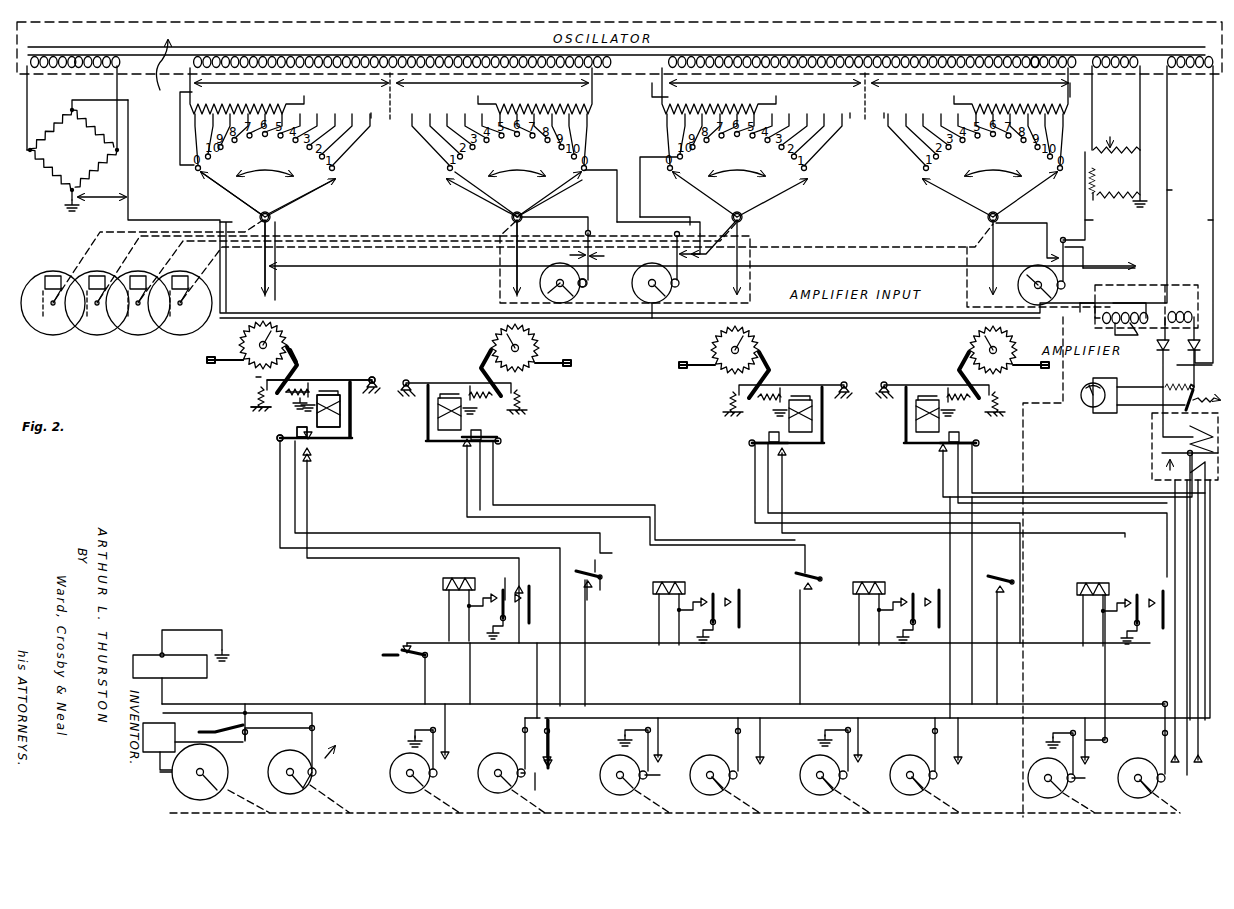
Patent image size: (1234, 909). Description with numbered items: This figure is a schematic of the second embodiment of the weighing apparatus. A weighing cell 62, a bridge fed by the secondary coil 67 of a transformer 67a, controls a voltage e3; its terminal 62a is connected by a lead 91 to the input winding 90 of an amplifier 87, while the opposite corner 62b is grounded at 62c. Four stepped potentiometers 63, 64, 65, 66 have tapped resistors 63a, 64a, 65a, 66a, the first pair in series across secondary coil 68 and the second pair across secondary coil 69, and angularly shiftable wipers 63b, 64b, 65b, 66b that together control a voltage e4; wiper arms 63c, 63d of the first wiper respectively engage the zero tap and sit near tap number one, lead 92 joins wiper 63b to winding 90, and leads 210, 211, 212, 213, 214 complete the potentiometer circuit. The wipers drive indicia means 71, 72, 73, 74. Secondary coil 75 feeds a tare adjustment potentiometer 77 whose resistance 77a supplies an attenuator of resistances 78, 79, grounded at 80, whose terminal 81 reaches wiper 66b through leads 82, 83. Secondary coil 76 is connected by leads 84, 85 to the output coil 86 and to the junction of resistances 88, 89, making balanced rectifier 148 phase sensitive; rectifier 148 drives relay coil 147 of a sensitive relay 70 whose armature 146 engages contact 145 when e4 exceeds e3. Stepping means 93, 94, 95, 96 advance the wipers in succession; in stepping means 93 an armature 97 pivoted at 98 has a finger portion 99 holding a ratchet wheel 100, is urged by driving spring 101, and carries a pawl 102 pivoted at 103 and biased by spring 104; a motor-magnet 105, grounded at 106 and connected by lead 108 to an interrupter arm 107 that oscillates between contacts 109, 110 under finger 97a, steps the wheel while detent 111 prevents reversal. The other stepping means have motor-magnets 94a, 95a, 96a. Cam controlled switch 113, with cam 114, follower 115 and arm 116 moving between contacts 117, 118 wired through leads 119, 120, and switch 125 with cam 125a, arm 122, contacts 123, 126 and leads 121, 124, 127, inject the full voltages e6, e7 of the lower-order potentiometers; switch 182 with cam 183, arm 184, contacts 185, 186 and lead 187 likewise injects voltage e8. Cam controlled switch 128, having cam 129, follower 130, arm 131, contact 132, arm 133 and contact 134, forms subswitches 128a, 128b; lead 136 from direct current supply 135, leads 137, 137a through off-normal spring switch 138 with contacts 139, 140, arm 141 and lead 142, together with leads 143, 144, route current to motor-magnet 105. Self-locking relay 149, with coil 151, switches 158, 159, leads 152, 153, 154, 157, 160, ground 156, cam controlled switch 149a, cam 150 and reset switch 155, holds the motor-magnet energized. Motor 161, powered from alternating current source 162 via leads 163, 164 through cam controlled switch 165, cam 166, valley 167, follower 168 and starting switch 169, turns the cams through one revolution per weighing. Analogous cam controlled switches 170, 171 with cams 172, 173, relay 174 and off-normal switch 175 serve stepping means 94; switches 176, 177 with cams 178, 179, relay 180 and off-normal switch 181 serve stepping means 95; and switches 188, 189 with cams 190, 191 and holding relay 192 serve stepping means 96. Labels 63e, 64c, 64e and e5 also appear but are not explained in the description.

The weighing cell 62 is at (73, 150).
The terminal 62a is at (70, 110).
The corner 62b is at (72, 188).
The ground 62c is at (68, 203).
The stepped potentiometer 63 is at (280, 181).
The tapped resistor 63a is at (373, 132).
The wiper 63b is at (265, 210).
The wiper arm 63c is at (224, 185).
The wiper arm 63d is at (310, 193).
The wiper lead 63e is at (264, 260).
The stepped potentiometer 64 is at (502, 181).
The tapped resistor 64a is at (485, 195).
The wiper 64b is at (517, 211).
The wiper arm 64c is at (558, 188).
The wiper lead 64e is at (516, 286).
The stepped potentiometer 65 is at (752, 181).
The tapped resistor 65a is at (849, 133).
The wiper 65b is at (737, 211).
The stepped potentiometer 66 is at (978, 181).
The tapped resistor 66a is at (891, 133).
The wiper 66b is at (993, 211).
The secondary coil 67 is at (80, 46).
The transformer 67a is at (155, 68).
The secondary coil 68 is at (402, 60).
The secondary coil 69 is at (862, 60).
The sensitive relay 70 is at (1151, 446).
The indicia means 71 is at (142, 287).
The indicia means 72 is at (291, 287).
The indicia means 73 is at (421, 288).
The indicia means 74 is at (570, 289).
The secondary coil 75 is at (1116, 91).
The secondary coil 76 is at (1146, 198).
The tare adjustment potentiometer 77 is at (1116, 136).
The resistance 77a is at (1120, 135).
The attenuator resistance 78 is at (1101, 180).
The attenuator resistance 79 is at (1118, 174).
The ground 80 is at (1133, 215).
The terminal 81 is at (1103, 204).
The lead 82 is at (1099, 225).
The lead 83 is at (1020, 222).
The lead 84 is at (1181, 190).
The lead 85 is at (1200, 220).
The output coil 86 is at (1180, 312).
The amplifier 87 is at (1114, 306).
The resistance 88 is at (1162, 386).
The resistance 89 is at (1203, 390).
The input winding 90 is at (1134, 334).
The lead 91 is at (128, 172).
The lead 92 is at (252, 220).
The stepping means 93 is at (293, 381).
The stepping means 94 is at (484, 384).
The motor-magnet 94a is at (480, 418).
The stepping means 95 is at (765, 386).
The motor-magnet 95a is at (788, 415).
The stepping means 96 is at (962, 386).
The motor-magnet 96a is at (953, 417).
The armature 97 is at (330, 380).
The finger 97a is at (352, 425).
The pivot 98 is at (375, 368).
The finger portion 99 is at (254, 375).
The ratchet wheel 100 is at (275, 332).
The driving spring 101 is at (256, 397).
The pawl 102 is at (296, 364).
The pivot 103 is at (262, 386).
The spring 104 is at (292, 394).
The motor-magnet 105 is at (342, 411).
The ground 106 is at (298, 404).
The interrupter arm 107 is at (316, 440).
The lead 108 is at (279, 440).
The contact 109 is at (311, 460).
The contact 110 is at (319, 444).
The detent 111 is at (226, 360).
The cam controlled switch 113 is at (554, 276).
The cam 114 is at (576, 290).
The follower 115 is at (588, 283).
The switch arm 116 is at (592, 265).
The contact 117 is at (569, 246).
The contact 118 is at (610, 255).
The lead 119 is at (546, 220).
The lead 120 is at (617, 218).
The lead 121 is at (658, 231).
The switch arm 122 is at (686, 276).
The contact 123 is at (701, 249).
The lead 124 is at (648, 212).
The cam controlled switch 125 is at (673, 283).
The cam 125a is at (660, 321).
The contact 126 is at (713, 235).
The lead 127 is at (640, 162).
The cam controlled switch 128 is at (508, 743).
The first switch 128a is at (524, 729).
The second switch 128b is at (556, 736).
The cam 129 is at (487, 785).
The follower 130 is at (555, 775).
The switch arm 131 is at (520, 742).
The contact 132 is at (540, 783).
The arm 133 is at (552, 764).
The contact 134 is at (555, 748).
The direct current supply 135 is at (209, 667).
The lead 136 is at (349, 702).
The lead 137 is at (535, 682).
The lead 137a is at (296, 504).
The off-normal spring switch 138 is at (603, 579).
The contact 139 is at (597, 567).
The contact 140 is at (588, 598).
The switch arm 141 is at (602, 584).
The lead 142 is at (585, 671).
The lead 143 is at (279, 502).
The lead 144 is at (604, 716).
The contact 145 is at (1182, 588).
The armature 146 is at (1190, 448).
The relay coil 147 is at (1187, 419).
The balanced rectifier 148 is at (1184, 363).
The self-locking relay 149 is at (459, 609).
The cam controlled switch 149a is at (447, 731).
The cam 150 is at (406, 758).
The coil 151 is at (472, 578).
The lead 152 is at (448, 617).
The lead 153 is at (411, 642).
The lead 154 is at (424, 675).
The reset switch 155 is at (394, 646).
The ground 156 is at (412, 738).
The lead 157 is at (472, 660).
The relay switch 158 is at (492, 580).
The relay switch 159 is at (539, 584).
The lead 160 is at (308, 526).
The motor 161 is at (184, 791).
The alternating current source 162 is at (157, 722).
The lead 163 is at (168, 770).
The lead 164 is at (334, 710).
The cam controlled switch 165 is at (343, 742).
The cam 166 is at (275, 785).
The valley 167 is at (301, 790).
The cam follower 168 is at (318, 775).
The starting switch 169 is at (228, 712).
The cam controlled switch 170 is at (727, 756).
The cam controlled switch 171 is at (661, 770).
The cam 172 is at (705, 794).
The cam 173 is at (616, 795).
The self-locking relay 174 is at (696, 603).
The off-normal switch 175 is at (826, 578).
The cam controlled switch means 176 is at (926, 756).
The cam controlled switch means 177 is at (821, 756).
The cam 178 is at (895, 794).
The cam 179 is at (800, 792).
The self-locking holding relay 180 is at (896, 603).
The off-normal switch 181 is at (1015, 582).
The cam controlled switch 182 is at (1036, 268).
The cam 183 is at (1025, 272).
The arm 184 is at (1084, 245).
The contact 185 is at (1063, 248).
The contact 186 is at (1086, 262).
The lead 187 is at (1085, 197).
The cam controlled switch 188 is at (1143, 752).
The cam controlled switch 189 is at (1087, 776).
The cam 190 is at (1130, 797).
The cam 191 is at (1030, 800).
The self-locking holding relay 192 is at (1120, 603).
The lead 210 is at (1046, 89).
The lead 211 is at (869, 104).
The lead 212 is at (652, 90).
The lead 213 is at (395, 104).
The lead 214 is at (180, 135).
The voltage e3 is at (102, 189).
The voltage e4 is at (702, 264).
The voltage e5 is at (291, 76).
The voltage e6 is at (492, 76).
The voltage e7 is at (765, 76).
The voltage e8 is at (970, 76).